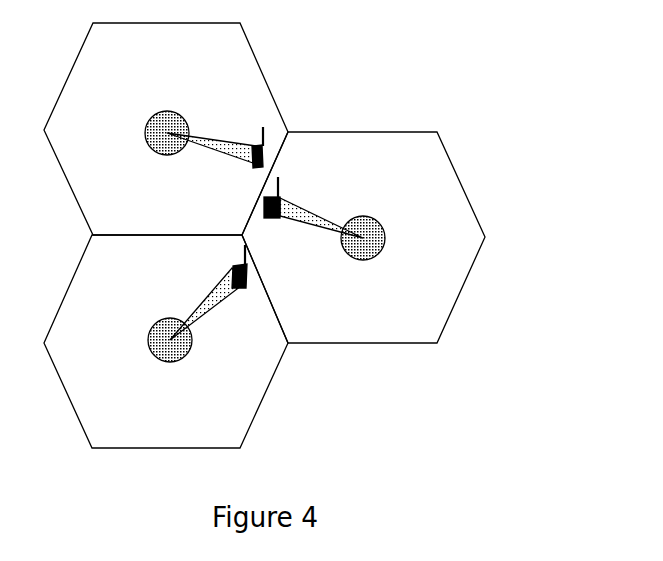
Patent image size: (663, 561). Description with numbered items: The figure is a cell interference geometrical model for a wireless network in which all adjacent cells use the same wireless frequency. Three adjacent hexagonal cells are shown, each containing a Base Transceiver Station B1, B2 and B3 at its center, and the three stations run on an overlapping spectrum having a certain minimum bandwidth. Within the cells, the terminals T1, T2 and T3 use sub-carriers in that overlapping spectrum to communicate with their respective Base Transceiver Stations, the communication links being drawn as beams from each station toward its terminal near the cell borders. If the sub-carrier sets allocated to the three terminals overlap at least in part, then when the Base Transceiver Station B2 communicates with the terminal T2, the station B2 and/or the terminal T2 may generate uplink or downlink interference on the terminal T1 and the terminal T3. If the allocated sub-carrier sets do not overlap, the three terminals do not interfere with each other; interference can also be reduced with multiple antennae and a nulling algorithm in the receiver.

The Base Transceiver Station B1 is at (167, 145).
The Base Transceiver Station B2 is at (170, 352).
The Base Transceiver Station B3 is at (363, 250).
The terminal T1 is at (215, 134).
The terminal T2 is at (208, 292).
The terminal T3 is at (313, 206).